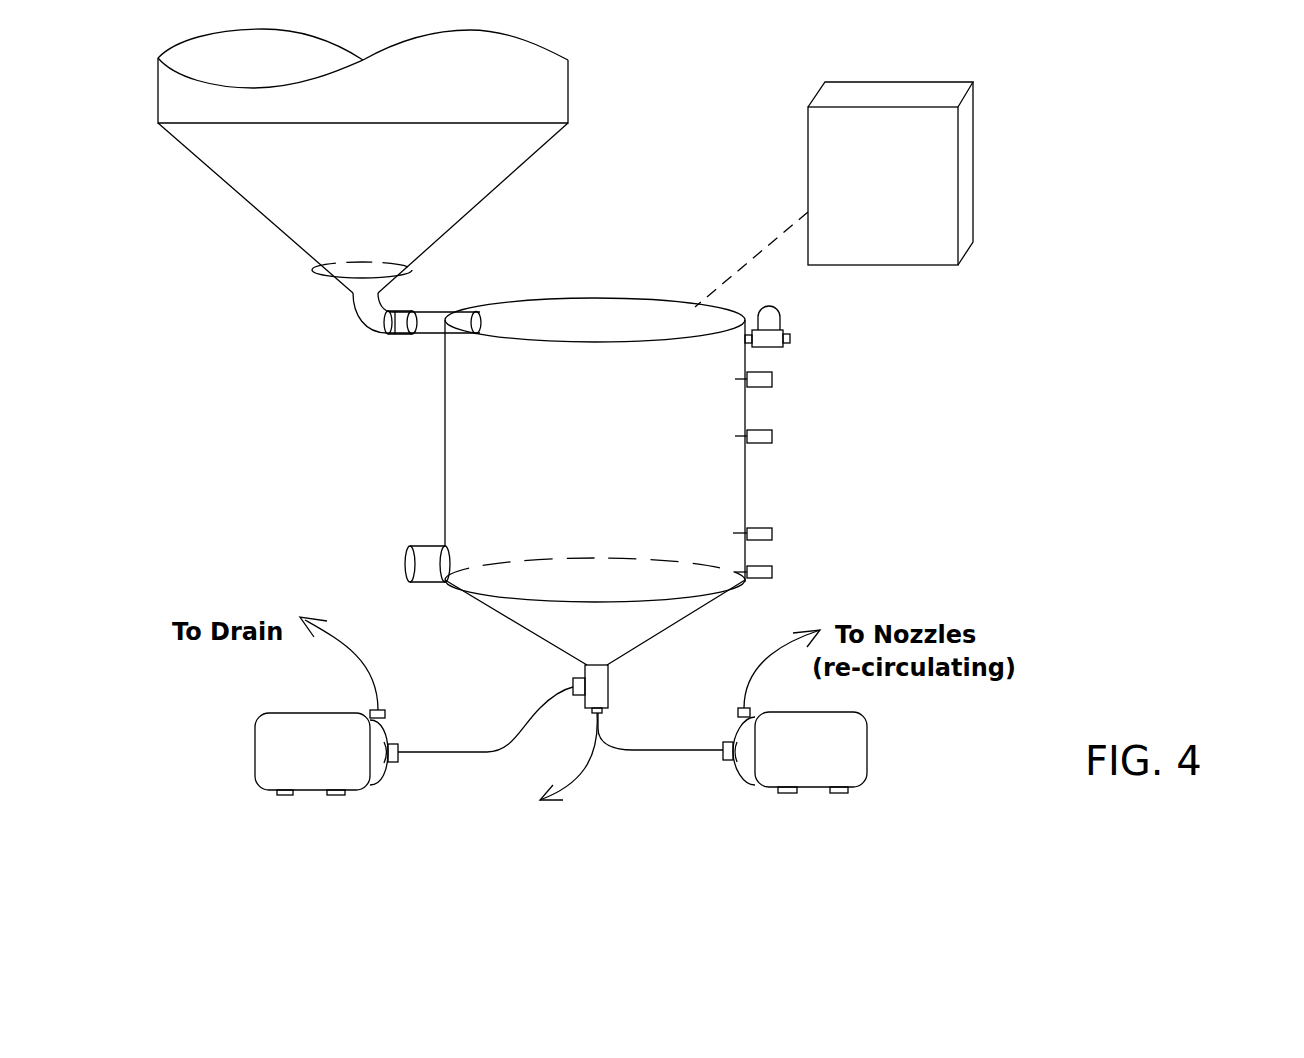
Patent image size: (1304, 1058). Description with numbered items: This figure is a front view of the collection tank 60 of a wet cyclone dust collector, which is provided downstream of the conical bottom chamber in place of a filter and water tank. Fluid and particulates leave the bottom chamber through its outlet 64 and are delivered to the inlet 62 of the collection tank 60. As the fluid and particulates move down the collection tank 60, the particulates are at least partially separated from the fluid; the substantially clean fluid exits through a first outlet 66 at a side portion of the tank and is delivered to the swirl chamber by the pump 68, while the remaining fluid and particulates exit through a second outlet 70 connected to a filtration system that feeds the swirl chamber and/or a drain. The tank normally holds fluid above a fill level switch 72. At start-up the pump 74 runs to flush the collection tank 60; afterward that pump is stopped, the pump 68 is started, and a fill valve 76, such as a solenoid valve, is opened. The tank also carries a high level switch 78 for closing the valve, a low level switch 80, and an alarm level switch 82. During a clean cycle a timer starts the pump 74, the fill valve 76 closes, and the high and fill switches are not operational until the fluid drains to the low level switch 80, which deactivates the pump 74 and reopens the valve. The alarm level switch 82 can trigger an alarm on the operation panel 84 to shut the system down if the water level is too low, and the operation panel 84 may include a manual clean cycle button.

The collection tank 60 is at (803, 490).
The inlet 62 is at (478, 320).
The outlet 64 is at (350, 297).
The first outlet 66 is at (405, 567).
The pump 68 is at (860, 785).
The second outlet 70 is at (597, 667).
The fill level switch 72 is at (772, 436).
The pump 74 is at (272, 716).
The fill valve 76 is at (780, 333).
The high level switch 78 is at (772, 379).
The low level switch 80 is at (772, 533).
The alarm level switch 82 is at (772, 571).
The operation panel 84 is at (967, 188).